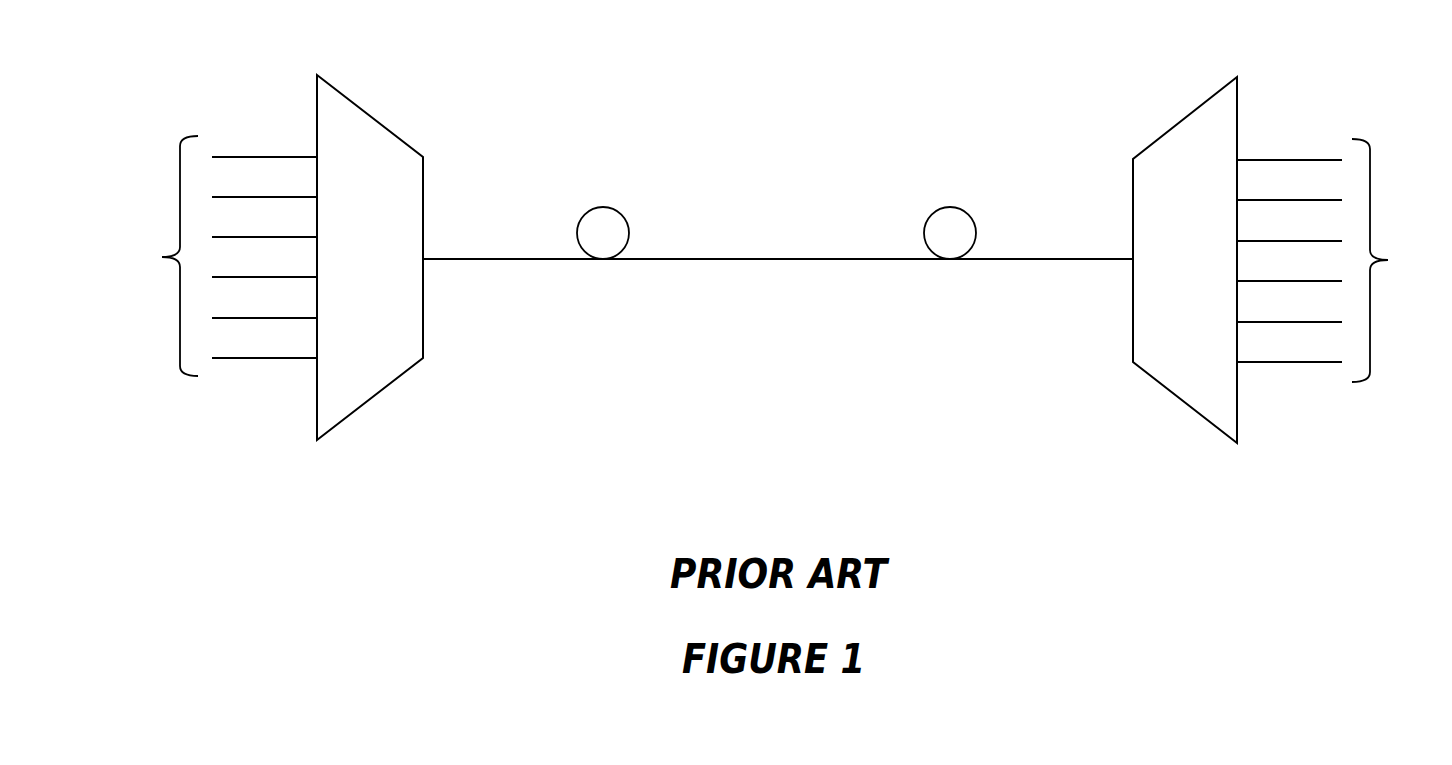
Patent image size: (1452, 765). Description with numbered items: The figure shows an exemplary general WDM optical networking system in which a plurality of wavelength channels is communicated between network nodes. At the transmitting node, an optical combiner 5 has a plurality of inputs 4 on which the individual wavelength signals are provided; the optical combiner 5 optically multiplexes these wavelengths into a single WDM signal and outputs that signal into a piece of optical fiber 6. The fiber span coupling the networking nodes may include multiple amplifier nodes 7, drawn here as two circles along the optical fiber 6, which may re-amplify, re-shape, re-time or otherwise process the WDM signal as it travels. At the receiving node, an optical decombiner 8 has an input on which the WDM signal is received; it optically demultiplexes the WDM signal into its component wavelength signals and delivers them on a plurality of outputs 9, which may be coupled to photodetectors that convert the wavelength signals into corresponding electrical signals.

The inputs 4 is at (223, 256).
The optical combiner 5 is at (383, 126).
The optical fiber 6 is at (783, 259).
The amplifier nodes 7 is at (927, 220).
The optical decombiner 8 is at (1168, 131).
The outputs 9 is at (1328, 260).